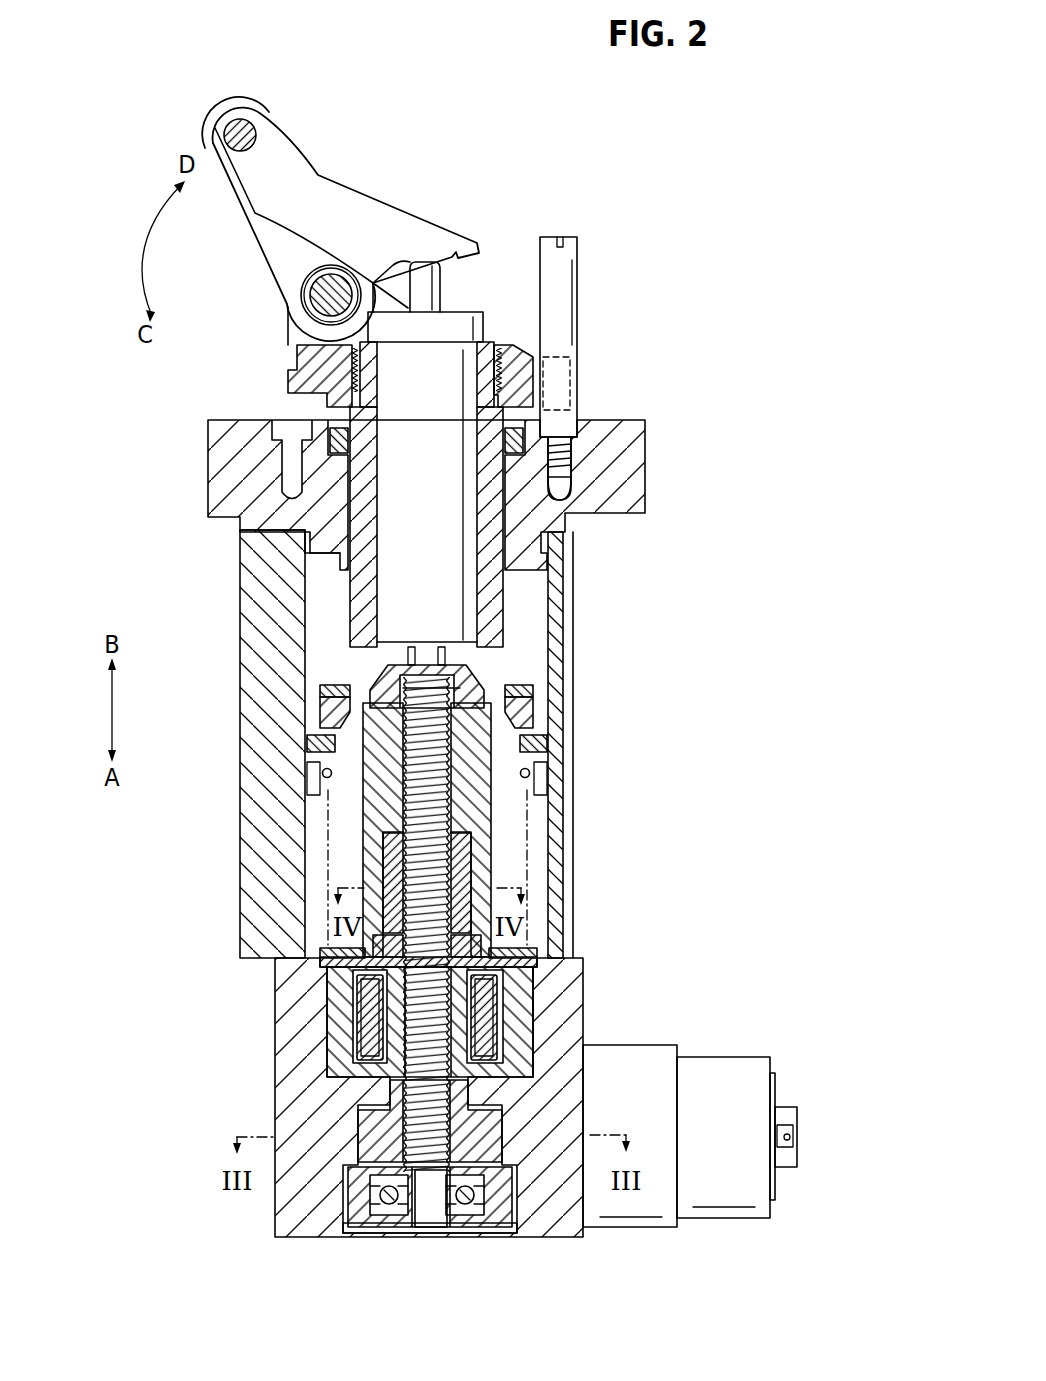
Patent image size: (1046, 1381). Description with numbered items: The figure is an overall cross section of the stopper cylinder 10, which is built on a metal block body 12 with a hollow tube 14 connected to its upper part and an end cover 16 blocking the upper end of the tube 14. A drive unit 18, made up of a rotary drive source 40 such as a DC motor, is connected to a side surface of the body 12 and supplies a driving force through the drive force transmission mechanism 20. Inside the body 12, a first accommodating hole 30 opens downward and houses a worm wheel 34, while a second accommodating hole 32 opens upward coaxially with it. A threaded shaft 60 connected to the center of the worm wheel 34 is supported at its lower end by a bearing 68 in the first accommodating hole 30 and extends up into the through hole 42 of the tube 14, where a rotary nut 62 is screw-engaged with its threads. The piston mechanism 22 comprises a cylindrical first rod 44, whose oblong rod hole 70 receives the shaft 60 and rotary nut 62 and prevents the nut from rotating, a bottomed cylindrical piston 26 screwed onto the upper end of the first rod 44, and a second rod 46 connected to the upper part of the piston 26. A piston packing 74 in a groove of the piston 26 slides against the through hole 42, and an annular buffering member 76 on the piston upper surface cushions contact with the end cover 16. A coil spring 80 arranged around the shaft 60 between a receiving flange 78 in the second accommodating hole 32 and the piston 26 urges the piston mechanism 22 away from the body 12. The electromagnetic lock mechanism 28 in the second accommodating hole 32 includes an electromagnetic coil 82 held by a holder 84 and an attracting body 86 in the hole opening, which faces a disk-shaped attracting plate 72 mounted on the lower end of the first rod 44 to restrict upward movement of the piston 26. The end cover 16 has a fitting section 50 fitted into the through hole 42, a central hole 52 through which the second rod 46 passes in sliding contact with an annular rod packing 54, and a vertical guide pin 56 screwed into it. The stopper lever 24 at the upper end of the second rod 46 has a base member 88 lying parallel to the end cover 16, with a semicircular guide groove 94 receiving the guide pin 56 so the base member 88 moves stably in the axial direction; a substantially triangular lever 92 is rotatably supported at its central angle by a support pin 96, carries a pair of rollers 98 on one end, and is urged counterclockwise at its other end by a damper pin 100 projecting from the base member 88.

The stopper cylinder 10 is at (722, 104).
The body 12 is at (438, 1108).
The tube 14 is at (585, 652).
The end cover 16 is at (655, 418).
The drive unit 18 is at (690, 1131).
The drive force transmission mechanism 20 is at (365, 1179).
The piston mechanism 22 is at (259, 744).
The stopper lever 24 is at (329, 199).
The piston 26 is at (548, 712).
The electromagnetic lock mechanism 28 is at (438, 1017).
The first accommodating hole 30 is at (513, 1227).
The second accommodating hole 32 is at (535, 1005).
The worm wheel 34 is at (360, 1132).
The rotary drive source 40 is at (727, 1197).
The through hole 42 is at (318, 668).
The first rod 44 is at (487, 802).
The second rod 46 is at (488, 594).
The fitting section 50 is at (312, 542).
The hole 52 is at (355, 513).
The rod packing 54 is at (508, 438).
The guide pin 56 is at (559, 283).
The shaft 60 is at (430, 1217).
The rotary nut 62 is at (467, 863).
The bearing 68 is at (392, 1202).
The rod hole 70 is at (375, 805).
The attracting plate 72 is at (370, 945).
The piston packing 74 is at (540, 742).
The buffering member 76 is at (522, 688).
The receiving flange 78 is at (537, 942).
The spring 80 is at (400, 795).
The electromagnetic coil 82 is at (368, 1050).
The holder 84 is at (518, 997).
The attracting body 86 is at (367, 982).
The base member 88 is at (320, 358).
The lever 92 is at (250, 182).
The guide groove 94 is at (535, 382).
The support pin 96 is at (338, 290).
The rollers 98 is at (268, 100).
The damper pin 100 is at (425, 280).